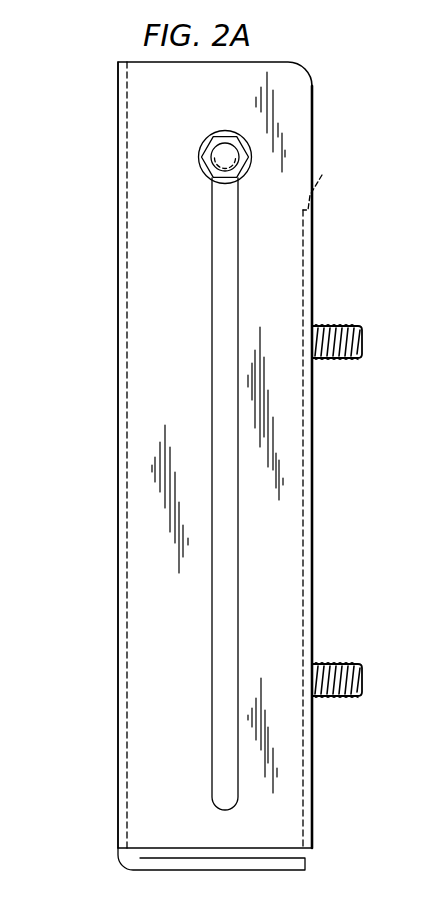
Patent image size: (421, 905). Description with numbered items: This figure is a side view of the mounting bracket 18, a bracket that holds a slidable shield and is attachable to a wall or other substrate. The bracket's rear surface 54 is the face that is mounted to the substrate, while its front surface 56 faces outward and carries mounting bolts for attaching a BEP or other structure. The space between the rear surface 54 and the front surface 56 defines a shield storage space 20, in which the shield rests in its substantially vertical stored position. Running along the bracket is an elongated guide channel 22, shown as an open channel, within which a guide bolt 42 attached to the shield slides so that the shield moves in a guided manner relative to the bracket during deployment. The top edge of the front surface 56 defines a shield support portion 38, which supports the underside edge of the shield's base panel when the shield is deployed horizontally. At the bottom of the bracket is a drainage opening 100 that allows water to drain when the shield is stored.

The mounting bracket 18 is at (319, 112).
The shield storage space 20 is at (143, 538).
The guide channel 22 is at (218, 360).
The shield support portion 38 is at (325, 500).
The guide bolt 42 is at (218, 154).
The rear surface 54 is at (118, 303).
The front surface 56 is at (309, 467).
The drainage opening 100 is at (272, 852).